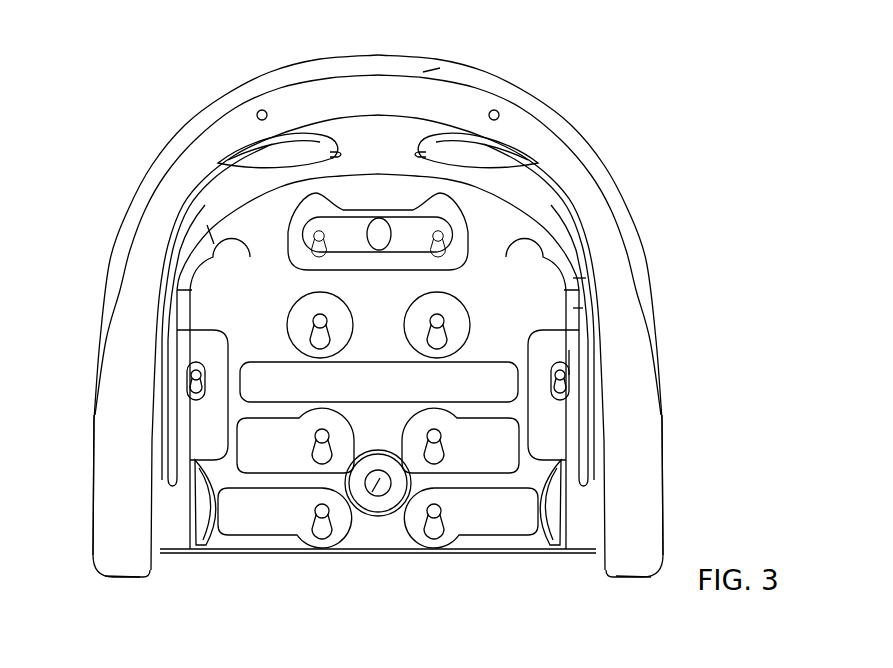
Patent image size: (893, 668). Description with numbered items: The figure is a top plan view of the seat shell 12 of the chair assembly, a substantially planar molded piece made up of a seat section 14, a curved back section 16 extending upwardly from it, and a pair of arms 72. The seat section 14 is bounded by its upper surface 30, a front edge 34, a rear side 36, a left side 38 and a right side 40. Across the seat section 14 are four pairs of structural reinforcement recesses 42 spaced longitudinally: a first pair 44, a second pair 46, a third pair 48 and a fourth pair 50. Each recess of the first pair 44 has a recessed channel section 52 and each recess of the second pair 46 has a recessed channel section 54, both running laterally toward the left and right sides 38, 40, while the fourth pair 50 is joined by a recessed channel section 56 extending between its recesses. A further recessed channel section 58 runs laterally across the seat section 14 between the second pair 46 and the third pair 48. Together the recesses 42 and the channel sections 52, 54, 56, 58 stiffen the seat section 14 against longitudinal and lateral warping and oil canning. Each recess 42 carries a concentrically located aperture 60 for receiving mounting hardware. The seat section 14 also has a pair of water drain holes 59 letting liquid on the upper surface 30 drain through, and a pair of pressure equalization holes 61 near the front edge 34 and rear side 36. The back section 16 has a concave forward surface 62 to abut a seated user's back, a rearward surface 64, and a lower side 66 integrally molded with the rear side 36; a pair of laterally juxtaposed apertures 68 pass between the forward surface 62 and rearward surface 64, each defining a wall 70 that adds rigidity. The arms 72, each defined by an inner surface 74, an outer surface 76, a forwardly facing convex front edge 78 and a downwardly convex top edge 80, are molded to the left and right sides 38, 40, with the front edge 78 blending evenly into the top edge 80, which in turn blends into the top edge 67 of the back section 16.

The seat shell 12 is at (698, 108).
The seat section 14 is at (573, 278).
The back section 16 is at (498, 73).
The upper surface 30 is at (557, 322).
The front edge 34 is at (213, 553).
The rear side 36 is at (470, 297).
The left side 38 is at (174, 280).
The right side 40 is at (573, 308).
The structural reinforcement recesses 42 is at (545, 290).
The first pair 44 is at (457, 515).
The second pair 46 is at (392, 508).
The third pair 48 is at (571, 362).
The fourth pair 50 is at (463, 213).
The recessed channel section 52 is at (258, 535).
The recessed channel section 54 is at (240, 420).
The recessed channel section 56 is at (400, 213).
The recessed channel section 58 is at (238, 363).
The water drain holes 59 is at (565, 381).
The aperture 60 is at (320, 548).
The pressure equalization holes 61 is at (378, 489).
The forward surface 62 is at (352, 133).
The rearward surface 64 is at (384, 56).
The lower side 66 is at (207, 225).
The top edge 67 is at (423, 72).
The aperture 68 is at (492, 145).
The wall 70 is at (507, 168).
The arms 72 is at (664, 478).
The inner surface 74 is at (163, 558).
The outer surface 76 is at (664, 510).
The front edge 78 is at (120, 578).
The top edge 80 is at (120, 455).